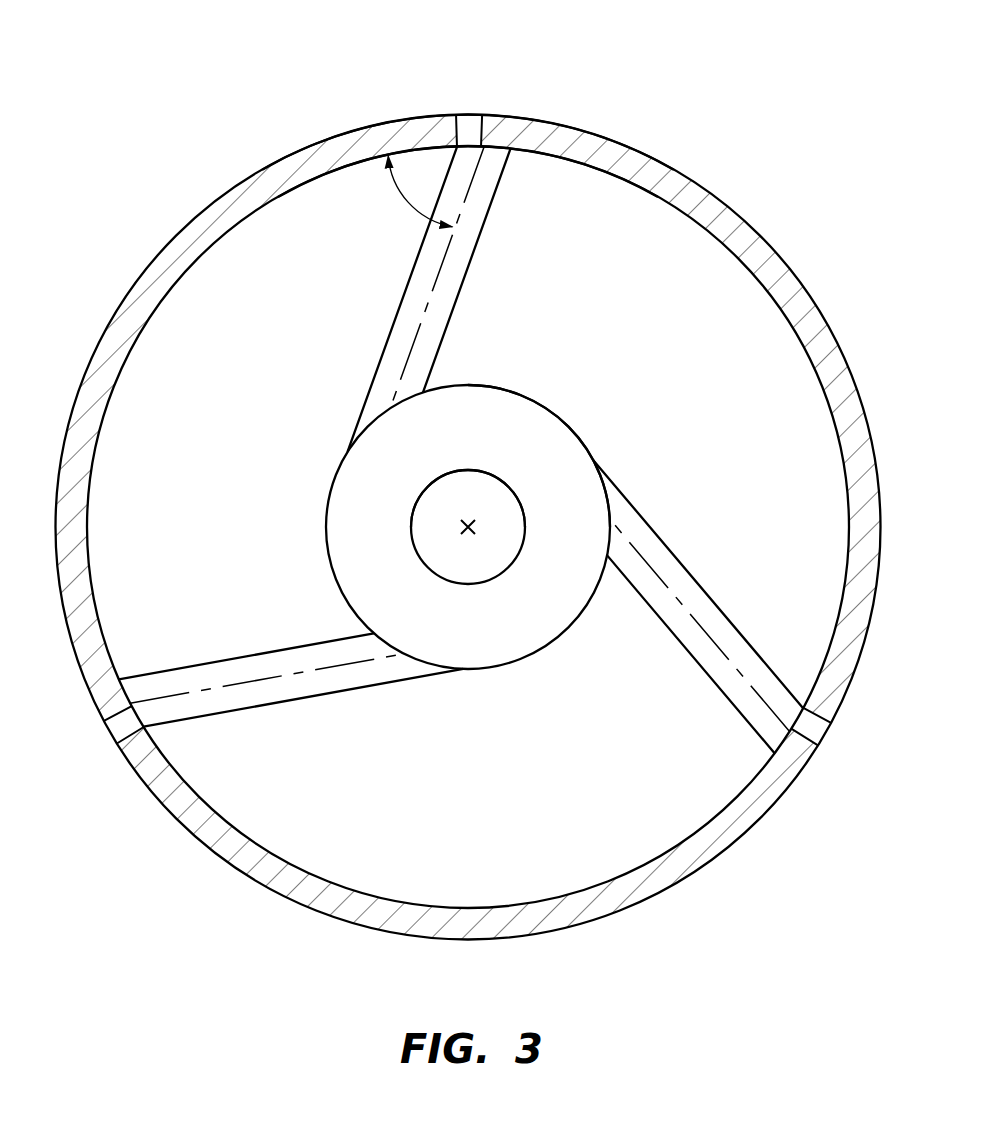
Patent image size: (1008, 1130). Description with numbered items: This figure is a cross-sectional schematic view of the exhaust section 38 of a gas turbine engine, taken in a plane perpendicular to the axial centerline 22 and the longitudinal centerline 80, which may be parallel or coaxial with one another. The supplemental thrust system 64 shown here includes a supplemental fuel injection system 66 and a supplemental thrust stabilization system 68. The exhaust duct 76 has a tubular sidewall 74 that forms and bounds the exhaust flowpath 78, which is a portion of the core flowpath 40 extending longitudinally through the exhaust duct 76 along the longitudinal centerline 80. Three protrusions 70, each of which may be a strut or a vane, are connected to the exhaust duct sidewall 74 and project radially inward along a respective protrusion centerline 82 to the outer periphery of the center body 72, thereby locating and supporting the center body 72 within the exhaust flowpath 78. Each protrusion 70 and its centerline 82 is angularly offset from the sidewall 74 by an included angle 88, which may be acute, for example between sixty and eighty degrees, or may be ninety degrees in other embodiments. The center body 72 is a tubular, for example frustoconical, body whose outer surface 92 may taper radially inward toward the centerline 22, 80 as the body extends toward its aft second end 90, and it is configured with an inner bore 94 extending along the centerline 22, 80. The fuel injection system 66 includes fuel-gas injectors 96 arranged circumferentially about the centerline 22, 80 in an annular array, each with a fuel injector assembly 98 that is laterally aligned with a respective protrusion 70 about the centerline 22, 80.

The axial centerline 22 is at (498, 572).
The exhaust section 38 is at (692, 175).
The core flowpath 40 is at (570, 806).
The supplemental thrust system 64 is at (547, 223).
The supplemental fuel injection system 66 is at (427, 80).
The supplemental thrust stabilization system 68 is at (438, 735).
The protrusion 70 is at (410, 276).
The center body 72 is at (538, 402).
The sidewall 74 is at (753, 222).
The exhaust duct 76 is at (793, 263).
The exhaust flowpath 78 is at (533, 821).
The longitudinal centerline 80 is at (472, 528).
The protrusion centerline 82 is at (440, 268).
The included angle 88 is at (412, 208).
The second end 90 is at (516, 493).
The outer surface 92 is at (556, 438).
The inner bore 94 is at (438, 507).
The fuel-gas injector 96 is at (461, 420).
The fuel injector assembly 98 is at (468, 106).